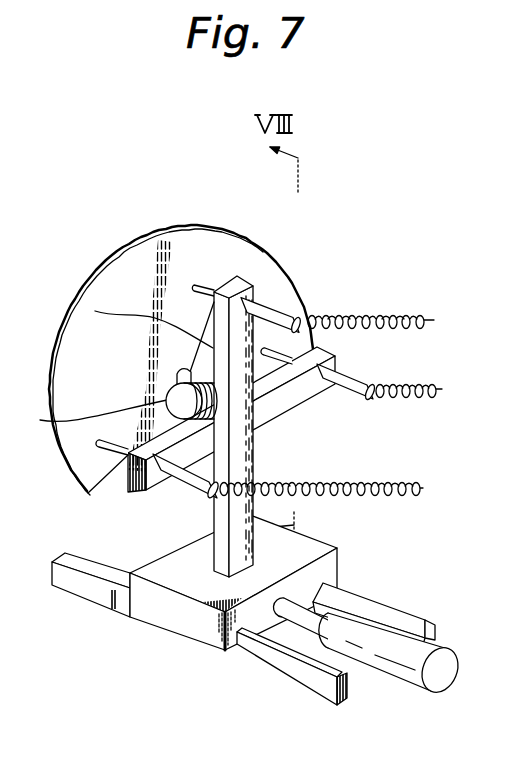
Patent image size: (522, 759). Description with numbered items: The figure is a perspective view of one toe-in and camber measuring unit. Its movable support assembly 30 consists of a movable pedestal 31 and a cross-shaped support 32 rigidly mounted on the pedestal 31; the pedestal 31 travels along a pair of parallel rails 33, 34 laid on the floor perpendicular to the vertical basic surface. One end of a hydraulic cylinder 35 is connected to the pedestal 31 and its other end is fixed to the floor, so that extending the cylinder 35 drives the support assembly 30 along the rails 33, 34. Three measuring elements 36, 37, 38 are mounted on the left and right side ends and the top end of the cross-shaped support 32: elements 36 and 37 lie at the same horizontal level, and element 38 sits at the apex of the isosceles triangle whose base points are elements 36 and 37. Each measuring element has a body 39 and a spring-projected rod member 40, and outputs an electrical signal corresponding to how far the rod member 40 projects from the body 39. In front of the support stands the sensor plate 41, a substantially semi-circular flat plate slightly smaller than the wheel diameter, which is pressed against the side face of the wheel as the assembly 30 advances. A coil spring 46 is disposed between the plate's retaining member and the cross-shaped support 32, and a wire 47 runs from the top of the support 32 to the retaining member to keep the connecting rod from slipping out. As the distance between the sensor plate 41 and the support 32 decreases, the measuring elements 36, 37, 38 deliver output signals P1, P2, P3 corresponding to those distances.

The movable support assembly 30 is at (318, 528).
The movable pedestal 31 is at (338, 556).
The cross-shaped support 32 is at (210, 540).
The rail 33 is at (299, 683).
The rail 34 is at (417, 612).
The hydraulic cylinder 35 is at (453, 664).
The measuring element 36 is at (200, 474).
The measuring element 37 is at (345, 377).
The measuring element 38 is at (283, 303).
The body 39 is at (262, 296).
The rod member 40 is at (214, 292).
The sensor plate 41 is at (194, 229).
The coil spring 46 is at (111, 369).
The wire 47 is at (95, 311).
The output signal P1 is at (339, 492).
The output signal P2 is at (426, 390).
The output signal P3 is at (389, 318).